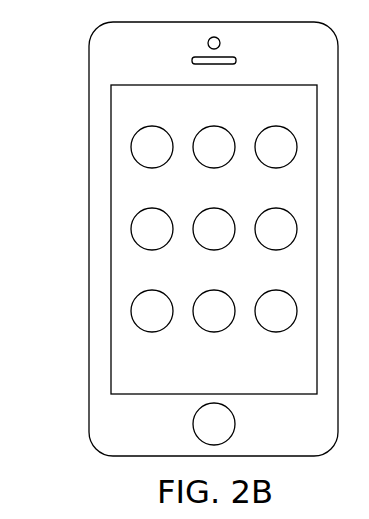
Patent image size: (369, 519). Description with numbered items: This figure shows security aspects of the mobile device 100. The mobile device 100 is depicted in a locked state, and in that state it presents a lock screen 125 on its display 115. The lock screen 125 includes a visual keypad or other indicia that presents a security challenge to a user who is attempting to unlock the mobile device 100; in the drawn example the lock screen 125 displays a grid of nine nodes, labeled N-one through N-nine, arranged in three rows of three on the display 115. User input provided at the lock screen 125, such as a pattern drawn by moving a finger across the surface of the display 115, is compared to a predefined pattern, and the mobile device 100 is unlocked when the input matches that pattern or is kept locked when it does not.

The mobile device 100 is at (89, 77).
The display 115 is at (110, 125).
The lock screen 125 is at (112, 188).